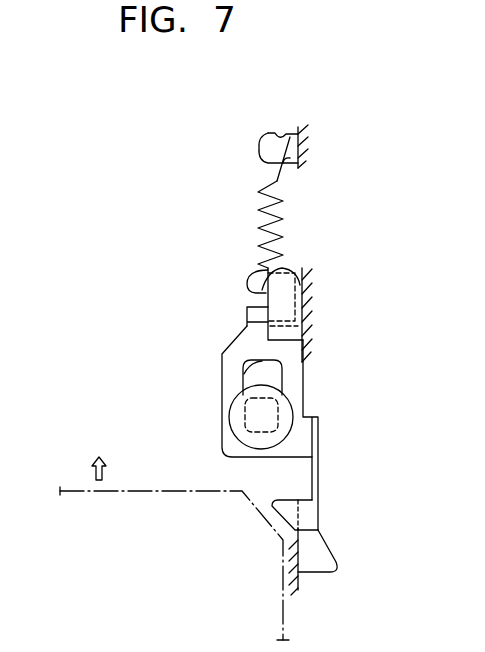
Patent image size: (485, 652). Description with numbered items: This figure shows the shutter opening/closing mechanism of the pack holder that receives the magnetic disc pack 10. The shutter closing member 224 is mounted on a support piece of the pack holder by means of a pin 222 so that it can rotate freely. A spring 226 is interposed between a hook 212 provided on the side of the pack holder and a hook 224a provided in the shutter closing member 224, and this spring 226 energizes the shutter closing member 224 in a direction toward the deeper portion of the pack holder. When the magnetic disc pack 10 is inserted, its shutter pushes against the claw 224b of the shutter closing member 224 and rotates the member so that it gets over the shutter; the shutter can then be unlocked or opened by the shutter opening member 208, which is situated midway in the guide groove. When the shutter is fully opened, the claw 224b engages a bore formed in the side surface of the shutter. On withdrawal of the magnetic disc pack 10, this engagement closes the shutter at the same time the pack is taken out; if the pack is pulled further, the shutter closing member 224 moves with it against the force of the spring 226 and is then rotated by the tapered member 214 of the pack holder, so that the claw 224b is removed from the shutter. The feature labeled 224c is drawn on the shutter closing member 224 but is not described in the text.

The magnetic disc pack 10 is at (75, 490).
The shutter opening member 208 is at (283, 343).
The hook 212 is at (260, 146).
The tapered member 214 is at (338, 557).
The pin 222 is at (230, 408).
The shutter closing member 224 is at (222, 449).
The hook 224a is at (258, 284).
The claw 224b is at (272, 512).
The lever slot 224c is at (243, 348).
The spring 226 is at (259, 218).